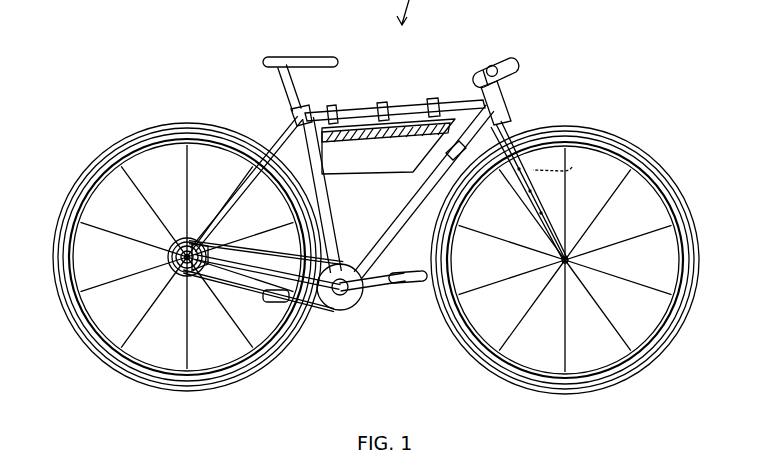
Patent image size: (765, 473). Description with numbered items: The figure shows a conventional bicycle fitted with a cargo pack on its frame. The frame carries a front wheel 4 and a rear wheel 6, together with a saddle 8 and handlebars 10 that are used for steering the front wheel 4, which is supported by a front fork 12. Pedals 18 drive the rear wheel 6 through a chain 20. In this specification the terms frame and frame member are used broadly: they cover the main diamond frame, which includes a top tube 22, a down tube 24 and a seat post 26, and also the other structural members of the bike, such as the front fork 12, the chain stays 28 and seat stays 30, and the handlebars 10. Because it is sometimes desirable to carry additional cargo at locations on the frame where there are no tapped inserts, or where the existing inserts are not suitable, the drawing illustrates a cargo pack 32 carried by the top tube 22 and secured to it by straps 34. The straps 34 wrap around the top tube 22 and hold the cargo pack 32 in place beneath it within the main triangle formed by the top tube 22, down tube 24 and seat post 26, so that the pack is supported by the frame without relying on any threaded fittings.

The front wheel 4 is at (662, 160).
The rear wheel 6 is at (87, 172).
The saddle 8 is at (284, 57).
The handlebars 10 is at (499, 60).
The front fork 12 is at (572, 167).
The pedals 18 is at (437, 281).
The chain 20 is at (330, 308).
The top tube 22 is at (458, 100).
The down tube 24 is at (428, 192).
The seat post 26 is at (318, 187).
The chain stays 28 is at (260, 272).
The seat stays 30 is at (277, 145).
The cargo pack 32 is at (287, 112).
The straps 34 is at (381, 107).